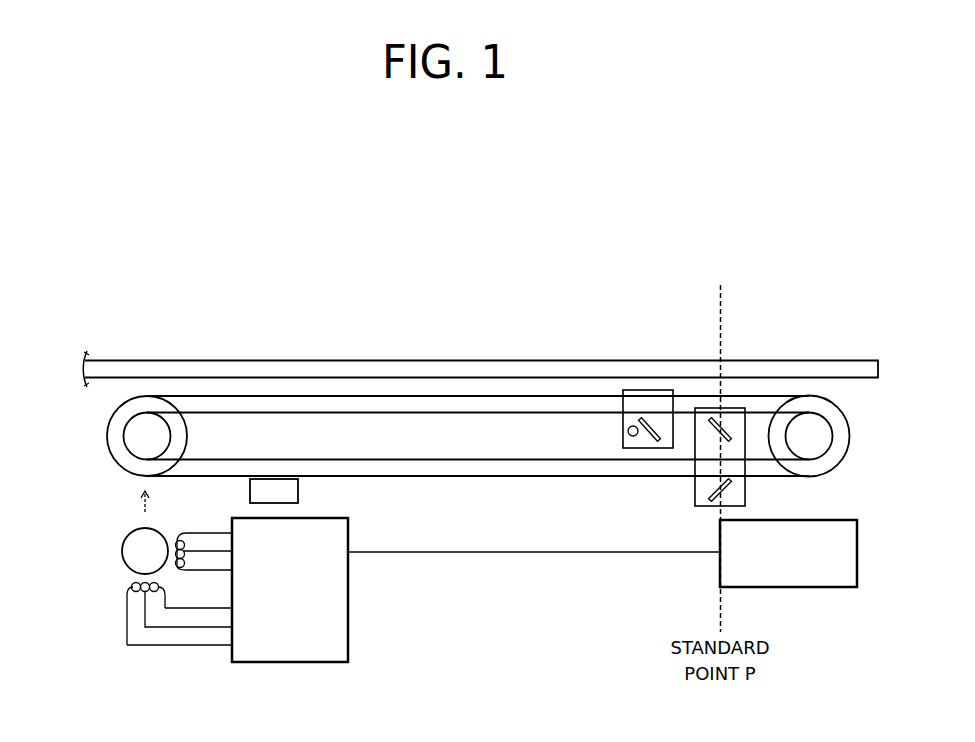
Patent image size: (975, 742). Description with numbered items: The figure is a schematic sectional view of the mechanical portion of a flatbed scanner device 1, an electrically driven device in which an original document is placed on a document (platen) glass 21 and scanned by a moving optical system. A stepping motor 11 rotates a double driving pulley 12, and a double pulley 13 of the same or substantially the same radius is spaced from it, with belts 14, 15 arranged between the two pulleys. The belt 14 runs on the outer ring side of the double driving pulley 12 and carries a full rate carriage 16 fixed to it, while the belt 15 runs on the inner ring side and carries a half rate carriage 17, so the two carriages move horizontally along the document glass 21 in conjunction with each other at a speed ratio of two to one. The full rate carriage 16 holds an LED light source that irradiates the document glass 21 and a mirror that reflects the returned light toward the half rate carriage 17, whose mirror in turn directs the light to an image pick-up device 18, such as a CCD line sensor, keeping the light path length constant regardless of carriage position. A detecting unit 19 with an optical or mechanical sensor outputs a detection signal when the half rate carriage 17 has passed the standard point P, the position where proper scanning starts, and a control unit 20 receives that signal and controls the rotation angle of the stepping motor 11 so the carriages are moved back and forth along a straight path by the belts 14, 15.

The flatbed scanner device 1 is at (168, 283).
The stepping motor 11 is at (92, 552).
The double driving pulley 12 is at (112, 453).
The double pulley 13 is at (845, 455).
The belt 14 is at (310, 395).
The belt 15 is at (237, 412).
The full rate carriage 16 is at (638, 390).
The half rate carriage 17 is at (737, 408).
The image pick-up device 18 is at (298, 488).
The detecting unit 19 is at (833, 589).
The control unit 20 is at (268, 663).
The document glass 21 is at (857, 368).